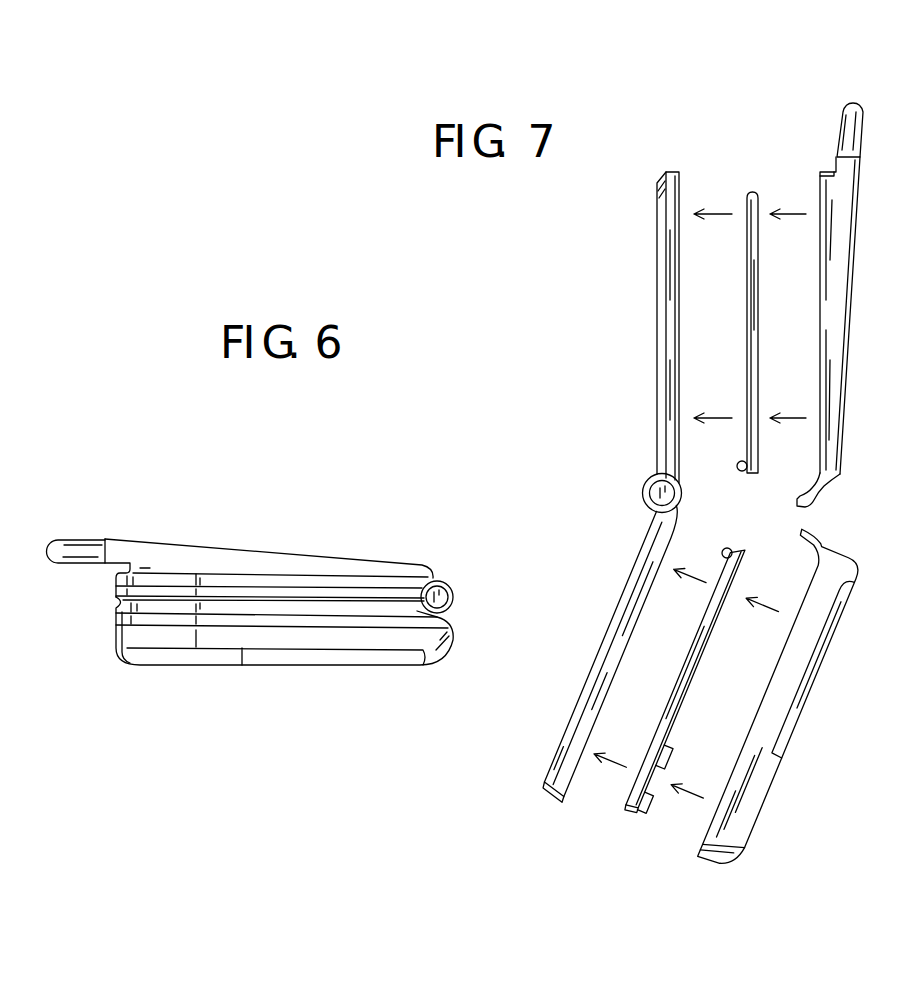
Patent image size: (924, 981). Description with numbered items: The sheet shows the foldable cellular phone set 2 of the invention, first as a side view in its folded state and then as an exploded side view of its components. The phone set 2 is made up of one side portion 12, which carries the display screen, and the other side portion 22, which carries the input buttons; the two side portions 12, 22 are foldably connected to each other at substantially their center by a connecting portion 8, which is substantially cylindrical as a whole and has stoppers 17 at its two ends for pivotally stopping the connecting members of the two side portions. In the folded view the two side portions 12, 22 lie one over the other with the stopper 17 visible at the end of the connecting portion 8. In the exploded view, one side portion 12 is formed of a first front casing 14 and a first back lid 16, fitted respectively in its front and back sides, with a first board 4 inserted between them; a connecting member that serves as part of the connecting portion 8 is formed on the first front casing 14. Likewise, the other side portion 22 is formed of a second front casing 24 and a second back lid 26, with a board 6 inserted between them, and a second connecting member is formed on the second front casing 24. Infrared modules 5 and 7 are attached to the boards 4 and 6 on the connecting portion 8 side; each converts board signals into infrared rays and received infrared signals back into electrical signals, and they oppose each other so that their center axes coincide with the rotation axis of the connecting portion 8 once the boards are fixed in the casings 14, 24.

In FIG. 6, the foldable cellular phone set 2 is at (301, 486).
In FIG. 6, the one side portion 12 is at (361, 555).
In FIG. 7, the one side portion 12 is at (865, 92).
In FIG. 6, the stopper 17 is at (447, 596).
In FIG. 6, the other side portion 22 is at (218, 678).
In FIG. 7, the other side portion 22 is at (536, 797).
In FIG. 7, the first front casing 14 is at (657, 308).
In FIG. 7, the first board 4 is at (758, 352).
In FIG. 7, the first back lid 16 is at (846, 412).
In FIG. 7, the connecting portion 8 is at (637, 472).
In FIG. 7, the infrared module 5 is at (737, 465).
In FIG. 7, the infrared module 7 is at (722, 552).
In FIG. 7, the second front casing 24 is at (580, 705).
In FIG. 7, the board 6 is at (688, 702).
In FIG. 7, the second back lid 26 is at (759, 827).